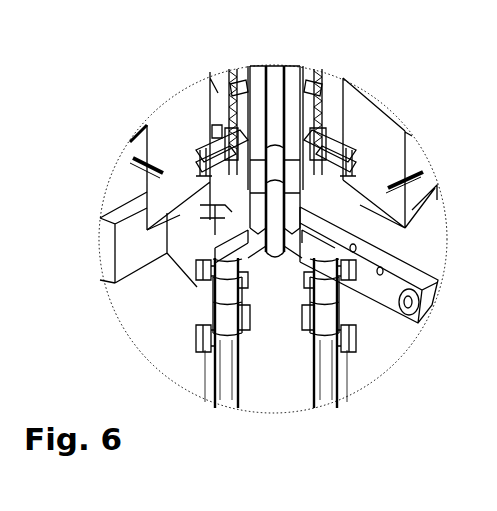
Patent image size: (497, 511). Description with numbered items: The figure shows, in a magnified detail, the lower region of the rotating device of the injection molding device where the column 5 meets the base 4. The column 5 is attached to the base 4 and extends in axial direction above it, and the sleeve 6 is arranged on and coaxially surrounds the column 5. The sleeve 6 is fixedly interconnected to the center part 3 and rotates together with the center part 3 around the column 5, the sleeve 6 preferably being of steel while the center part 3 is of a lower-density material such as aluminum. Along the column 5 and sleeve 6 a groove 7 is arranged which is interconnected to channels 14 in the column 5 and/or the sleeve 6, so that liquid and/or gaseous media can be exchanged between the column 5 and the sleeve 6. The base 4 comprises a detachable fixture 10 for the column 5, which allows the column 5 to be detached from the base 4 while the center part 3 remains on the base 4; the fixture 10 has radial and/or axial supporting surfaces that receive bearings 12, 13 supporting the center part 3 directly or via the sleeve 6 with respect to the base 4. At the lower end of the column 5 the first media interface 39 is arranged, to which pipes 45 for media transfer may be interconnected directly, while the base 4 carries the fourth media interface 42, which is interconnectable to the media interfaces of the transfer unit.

The center part 3 is at (186, 135).
The base 4 is at (390, 167).
The column 5 is at (312, 70).
The sleeve 6 is at (210, 77).
The groove 7 is at (343, 78).
The detachable fixture 10 is at (178, 184).
The bearing 12 is at (347, 120).
The bearing 13 is at (210, 80).
The channel 14 is at (263, 62).
The first media interface 39 is at (200, 148).
The fourth media interface 42 is at (170, 268).
The pipe 45 is at (180, 338).